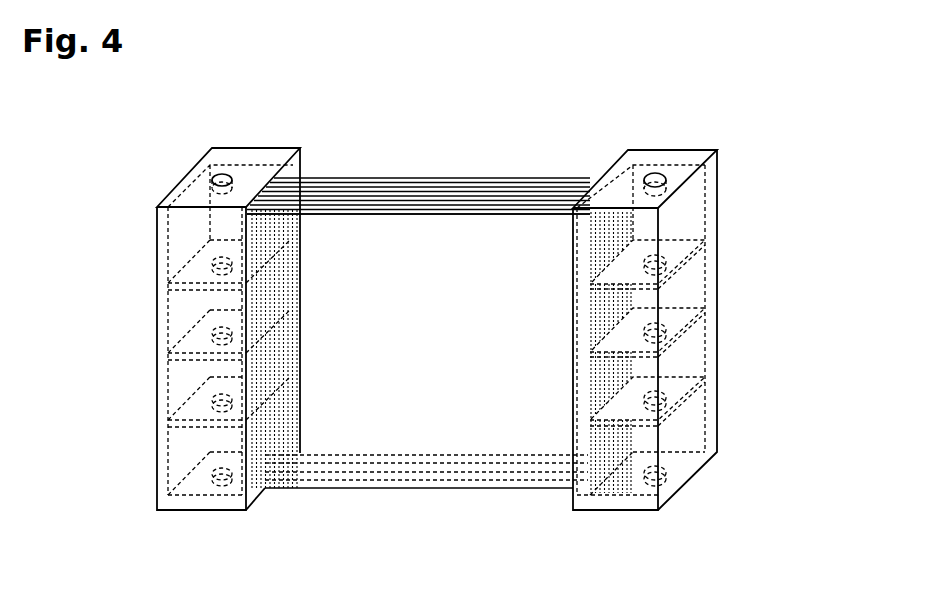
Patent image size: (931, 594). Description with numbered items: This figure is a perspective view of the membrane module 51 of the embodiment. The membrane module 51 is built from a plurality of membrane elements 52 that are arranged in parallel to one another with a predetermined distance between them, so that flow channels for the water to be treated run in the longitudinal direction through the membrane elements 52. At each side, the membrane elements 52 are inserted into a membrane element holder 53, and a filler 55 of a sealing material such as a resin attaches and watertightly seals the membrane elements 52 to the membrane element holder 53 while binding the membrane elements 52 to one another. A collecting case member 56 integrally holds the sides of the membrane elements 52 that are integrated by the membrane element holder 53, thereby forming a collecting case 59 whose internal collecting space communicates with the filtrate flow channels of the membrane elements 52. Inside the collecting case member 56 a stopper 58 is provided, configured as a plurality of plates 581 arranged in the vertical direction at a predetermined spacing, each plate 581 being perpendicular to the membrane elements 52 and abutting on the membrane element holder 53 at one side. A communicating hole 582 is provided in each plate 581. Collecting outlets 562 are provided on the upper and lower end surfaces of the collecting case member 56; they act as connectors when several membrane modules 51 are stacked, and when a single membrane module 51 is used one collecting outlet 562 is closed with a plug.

The membrane module 51 is at (484, 153).
The membrane element 52 is at (390, 230).
The membrane element holder 53 is at (607, 478).
The filler 55 is at (614, 480).
The collecting case member 56 is at (701, 332).
The collecting outlet 562 is at (653, 175).
The stopper 58 is at (785, 232).
The plate 581 is at (692, 243).
The communicating hole 582 is at (692, 376).
The collecting case 59 is at (696, 144).